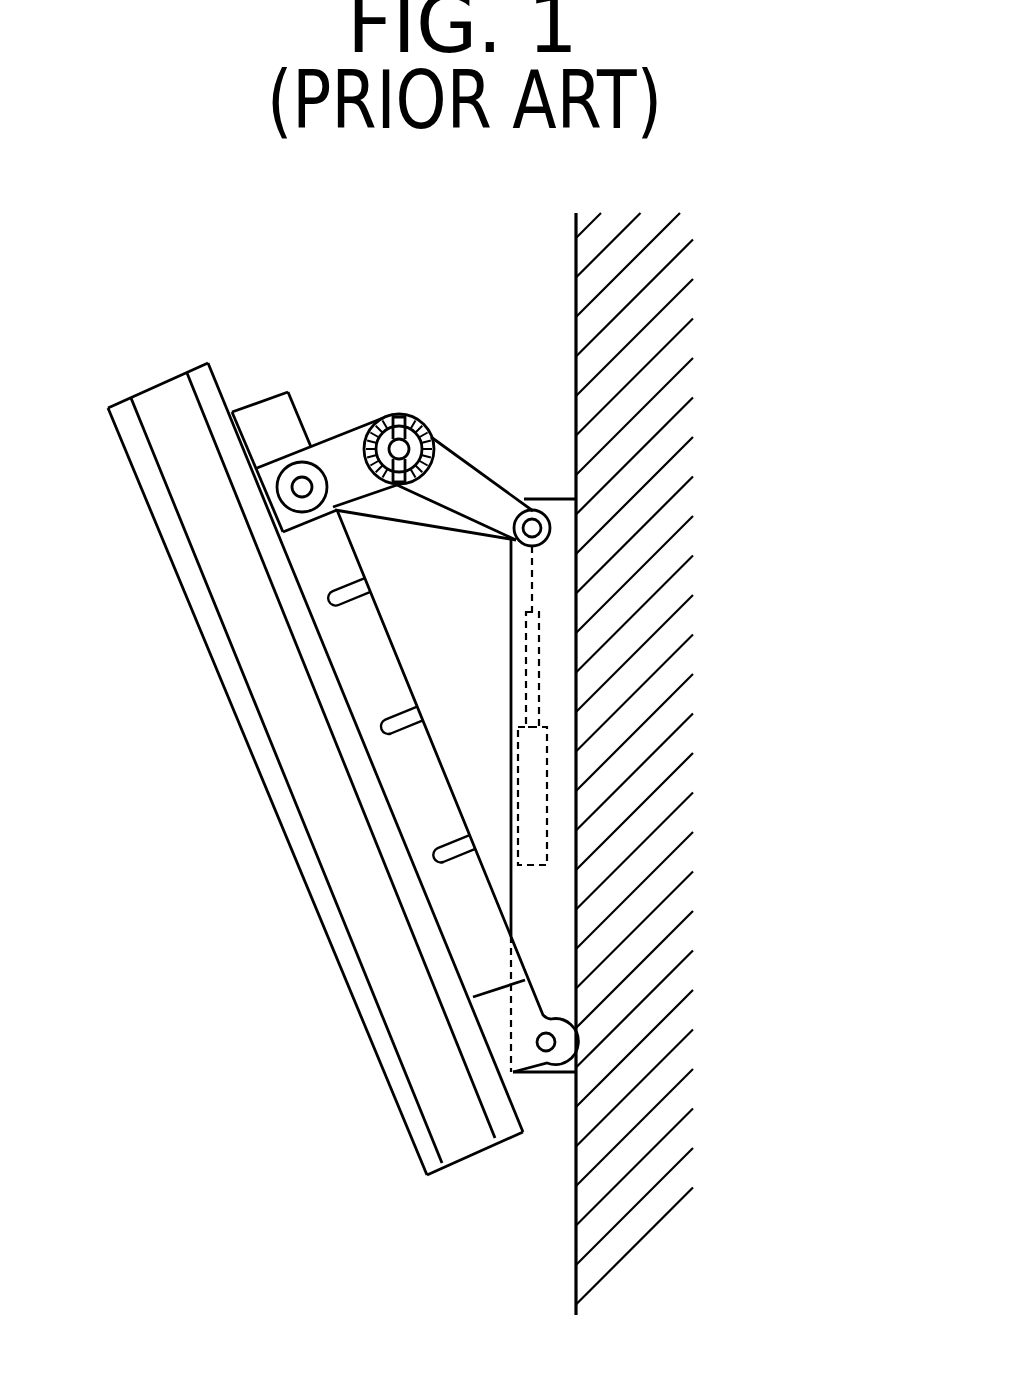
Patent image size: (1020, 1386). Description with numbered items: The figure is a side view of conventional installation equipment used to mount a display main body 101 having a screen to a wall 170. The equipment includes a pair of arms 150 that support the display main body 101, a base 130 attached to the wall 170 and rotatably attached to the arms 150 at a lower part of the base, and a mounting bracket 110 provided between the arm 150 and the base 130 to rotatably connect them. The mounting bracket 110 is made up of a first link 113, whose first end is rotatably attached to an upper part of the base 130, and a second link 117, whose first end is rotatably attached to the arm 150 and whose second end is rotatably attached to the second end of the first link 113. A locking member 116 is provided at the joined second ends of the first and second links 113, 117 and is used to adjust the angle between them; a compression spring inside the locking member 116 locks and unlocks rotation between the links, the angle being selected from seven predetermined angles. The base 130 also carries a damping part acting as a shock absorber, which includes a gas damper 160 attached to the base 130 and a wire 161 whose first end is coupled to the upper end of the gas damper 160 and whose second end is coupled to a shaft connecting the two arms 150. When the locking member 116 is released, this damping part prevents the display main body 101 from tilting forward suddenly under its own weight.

The display main body 101 is at (369, 1037).
The mounting bracket 110 is at (403, 394).
The first link 113 is at (473, 429).
The locking member 116 is at (398, 413).
The second link 117 is at (353, 442).
The base 130 is at (558, 615).
The arm 150 is at (268, 415).
The gas damper 160 is at (535, 765).
The wire 161 is at (480, 537).
The wall 170 is at (577, 891).